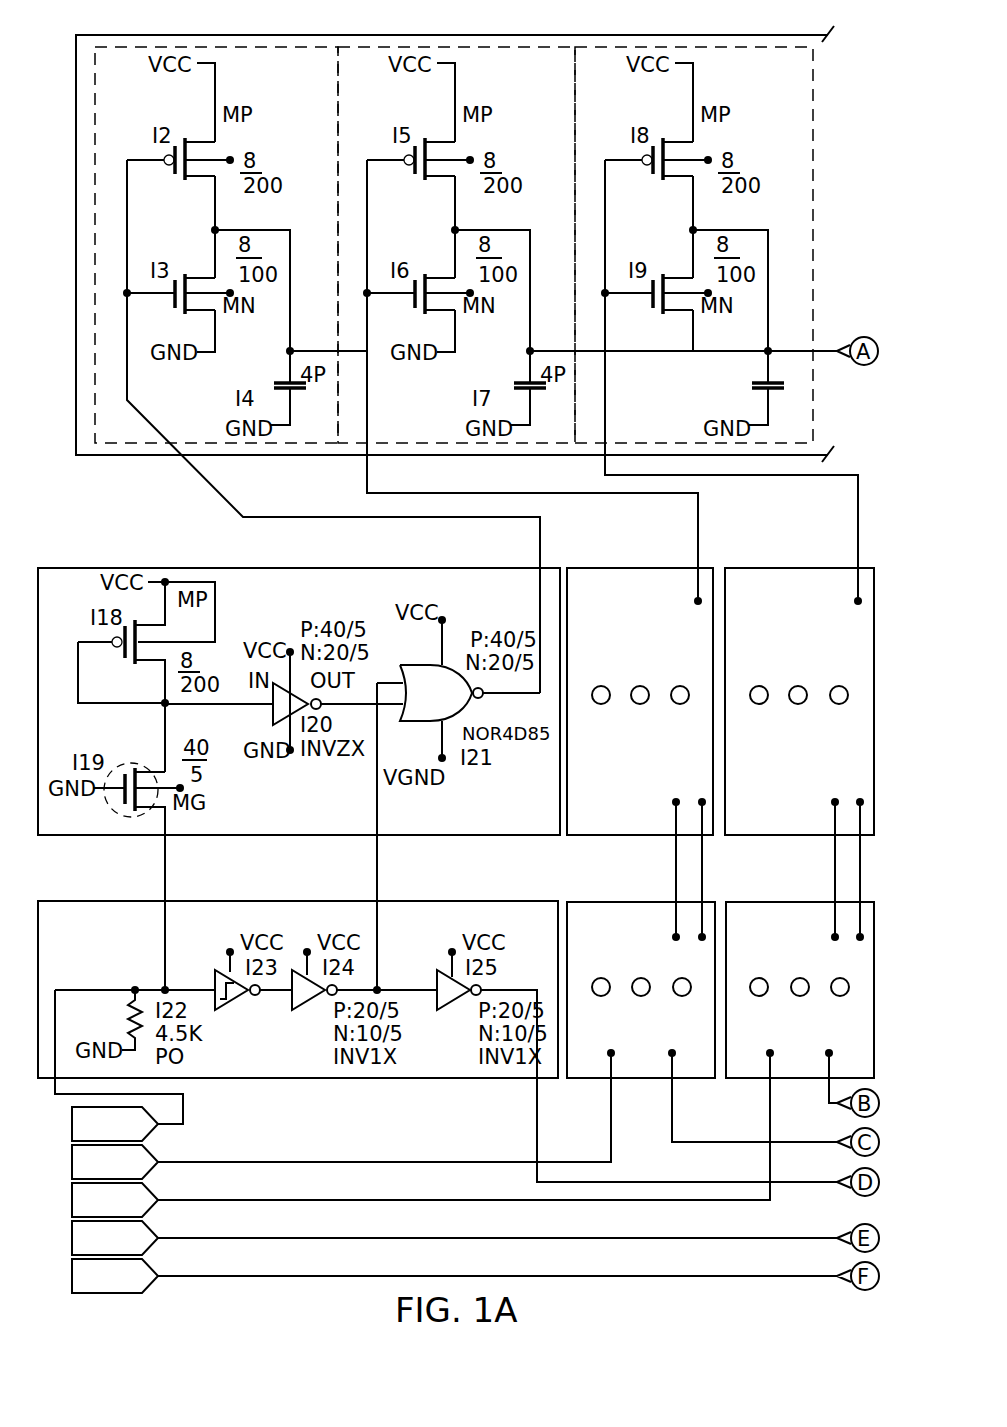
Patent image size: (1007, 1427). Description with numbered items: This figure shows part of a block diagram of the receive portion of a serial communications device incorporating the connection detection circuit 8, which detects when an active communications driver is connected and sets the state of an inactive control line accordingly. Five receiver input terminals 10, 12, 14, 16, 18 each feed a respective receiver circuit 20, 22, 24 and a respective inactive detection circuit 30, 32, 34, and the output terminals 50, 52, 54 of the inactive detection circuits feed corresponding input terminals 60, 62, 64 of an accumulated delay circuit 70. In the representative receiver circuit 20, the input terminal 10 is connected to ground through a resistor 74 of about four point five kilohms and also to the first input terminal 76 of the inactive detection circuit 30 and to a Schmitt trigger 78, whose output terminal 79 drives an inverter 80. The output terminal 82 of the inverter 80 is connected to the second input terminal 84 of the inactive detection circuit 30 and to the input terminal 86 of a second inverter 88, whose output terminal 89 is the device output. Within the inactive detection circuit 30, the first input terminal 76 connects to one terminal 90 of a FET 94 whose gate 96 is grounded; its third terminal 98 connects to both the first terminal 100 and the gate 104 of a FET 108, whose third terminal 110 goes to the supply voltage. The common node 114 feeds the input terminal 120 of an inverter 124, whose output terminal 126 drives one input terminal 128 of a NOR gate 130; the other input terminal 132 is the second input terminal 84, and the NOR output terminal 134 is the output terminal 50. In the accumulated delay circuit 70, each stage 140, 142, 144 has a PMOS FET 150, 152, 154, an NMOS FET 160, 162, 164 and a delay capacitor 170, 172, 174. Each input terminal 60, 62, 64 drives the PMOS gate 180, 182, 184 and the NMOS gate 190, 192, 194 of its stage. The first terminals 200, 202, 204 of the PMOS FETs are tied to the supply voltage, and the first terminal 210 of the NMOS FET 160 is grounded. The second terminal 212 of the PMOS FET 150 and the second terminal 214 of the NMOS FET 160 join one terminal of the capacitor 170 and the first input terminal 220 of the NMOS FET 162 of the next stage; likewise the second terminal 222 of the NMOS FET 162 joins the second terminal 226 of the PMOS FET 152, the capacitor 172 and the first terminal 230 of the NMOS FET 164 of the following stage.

The connection detection circuit 8 is at (58, 180).
The accumulated delay circuit 70 is at (66, 322).
The stage 140 is at (308, 64).
The stage 142 is at (548, 64).
The stage 144 is at (788, 64).
The gate of PMOS FET 180 is at (150, 160).
The gate of PMOS FET 182 is at (390, 160).
The gate of PMOS FET 184 is at (628, 160).
The PMOS FET 150 is at (178, 184).
The PMOS FET 152 is at (418, 184).
The PMOS FET 154 is at (656, 184).
The first terminal of PMOS FET 200 is at (200, 140).
The first terminal of PMOS FET 202 is at (440, 140).
The first terminal of PMOS FET 204 is at (678, 140).
The second terminal of PMOS FET 212 is at (218, 210).
The second terminal of NMOS FET 214 is at (212, 233).
The second terminal of PMOS FET 226 is at (458, 210).
The second terminal of NMOS FET 222 is at (452, 233).
The gate of NMOS FET 190 is at (143, 296).
The gate of NMOS FET 192 is at (383, 296).
The gate of NMOS FET 194 is at (621, 296).
The NMOS FET 160 is at (230, 330).
The NMOS FET 162 is at (470, 330).
The NMOS FET 164 is at (708, 330).
The first terminal of NMOS FET 210 is at (203, 358).
The first input terminal of NMOS FET 220 is at (443, 358).
The first terminal of NMOS FET 230 is at (681, 358).
The delay capacitor 170 is at (296, 400).
The delay capacitor 172 is at (536, 400).
The delay capacitor 174 is at (774, 400).
The input terminal of accumulated delay circuit 60 is at (190, 466).
The input terminal of accumulated delay circuit 62 is at (368, 466).
The input terminal of accumulated delay circuit 64 is at (604, 472).
The inactive detection circuit 30 is at (310, 568).
The inactive detection circuit 32 is at (622, 518).
The inactive detection circuit 34 is at (780, 518).
The output terminal of inactive detection circuit 50 is at (538, 520).
The output terminal of inactive detection circuit 52 is at (700, 505).
The output terminal of inactive detection circuit 54 is at (856, 505).
The FET 108 is at (152, 604).
The gate of FET 104 is at (78, 642).
The third terminal of FET 110 is at (168, 612).
The first terminal of FET 100 is at (163, 678).
The common node 114 is at (167, 706).
The input terminal of inverter 120 is at (228, 706).
The inverter 124 is at (299, 612).
The output terminal of inverter 126 is at (358, 706).
The input terminal of NOR gate 128 is at (407, 836).
The NOR gate 130 is at (450, 732).
The input terminal of NOR gate 132 is at (398, 722).
The output terminal of NOR gate 134 is at (539, 606).
The FET 94 is at (118, 765).
The third terminal of FET 98 is at (164, 742).
The gate of FET 96 is at (108, 800).
The terminal of FET 90 is at (168, 828).
The first input terminal of inactive detection circuit 76 is at (167, 870).
The second input terminal of inactive detection circuit 84 is at (379, 870).
The output terminal of inverter 82 is at (368, 984).
The resistor 74 is at (128, 1017).
The Schmitt trigger 78 is at (215, 1016).
The output terminal of Schmitt trigger 79 is at (266, 998).
The inverter 80 is at (290, 1016).
The input terminal of second inverter 86 is at (400, 998).
The second inverter 88 is at (434, 1016).
The output terminal of second inverter 89 is at (515, 990).
The receiver circuit 20 is at (392, 1085).
The receiver circuit 22 is at (588, 1084).
The receiver circuit 24 is at (738, 1084).
The receiver input terminal 10 is at (72, 1124).
The receiver input terminal 12 is at (72, 1162).
The receiver input terminal 14 is at (72, 1200).
The receiver input terminal 16 is at (72, 1238).
The receiver input terminal 18 is at (72, 1276).